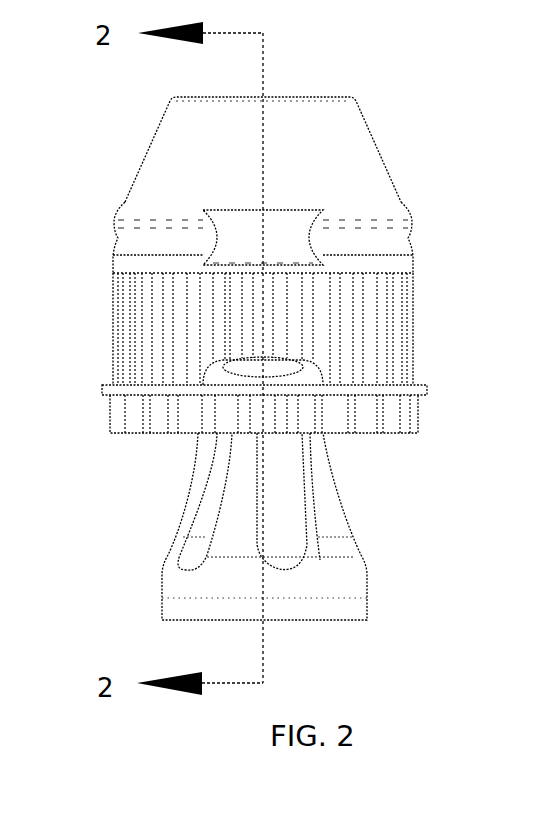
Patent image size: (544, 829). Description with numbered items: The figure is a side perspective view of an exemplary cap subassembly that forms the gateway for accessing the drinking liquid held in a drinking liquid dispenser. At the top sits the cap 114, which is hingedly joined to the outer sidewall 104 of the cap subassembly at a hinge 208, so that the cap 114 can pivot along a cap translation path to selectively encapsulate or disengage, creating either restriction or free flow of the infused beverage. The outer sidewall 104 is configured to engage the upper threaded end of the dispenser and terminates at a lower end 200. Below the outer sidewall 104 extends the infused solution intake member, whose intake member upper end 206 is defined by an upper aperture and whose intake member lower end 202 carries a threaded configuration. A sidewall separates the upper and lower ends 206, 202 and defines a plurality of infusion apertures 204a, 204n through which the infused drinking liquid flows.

The outer sidewall 104 is at (412, 332).
The cap 114 is at (367, 148).
The lower end 200 is at (273, 359).
The intake member lower end 202 is at (162, 621).
The infusion aperture 204a is at (283, 520).
The infusion aperture 204n is at (213, 488).
The intake member upper end 206 is at (218, 388).
The hinge 208 is at (296, 241).